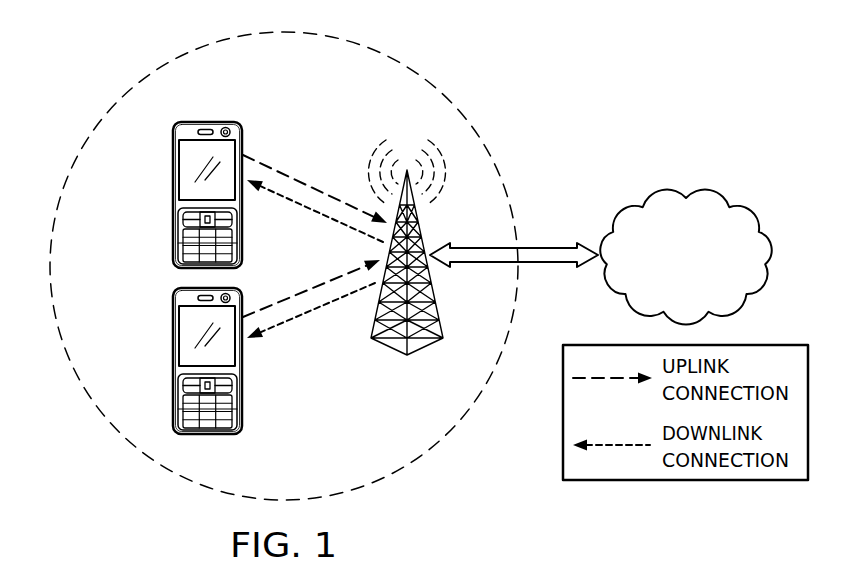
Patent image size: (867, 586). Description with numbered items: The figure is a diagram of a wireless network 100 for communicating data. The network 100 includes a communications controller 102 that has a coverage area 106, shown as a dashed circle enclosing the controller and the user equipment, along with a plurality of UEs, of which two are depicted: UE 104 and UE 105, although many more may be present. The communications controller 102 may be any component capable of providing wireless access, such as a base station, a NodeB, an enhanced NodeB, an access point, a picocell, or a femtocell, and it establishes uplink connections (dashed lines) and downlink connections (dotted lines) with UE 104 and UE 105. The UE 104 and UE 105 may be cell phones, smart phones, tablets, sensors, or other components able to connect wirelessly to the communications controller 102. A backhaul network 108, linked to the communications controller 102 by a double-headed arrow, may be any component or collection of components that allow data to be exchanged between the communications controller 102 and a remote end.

The network 100 is at (570, 107).
The communications controller 102 is at (423, 346).
The UE 104 is at (173, 194).
The UE 105 is at (173, 360).
The coverage area 106 is at (172, 57).
The backhaul network 108 is at (686, 190).